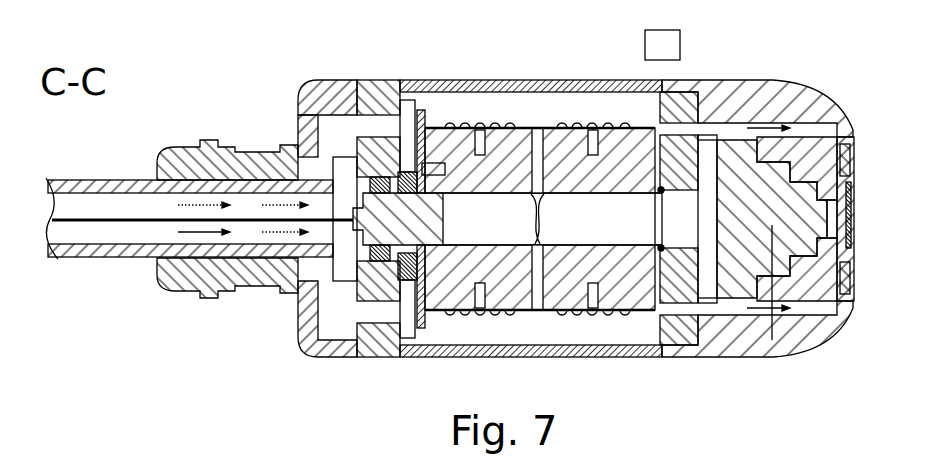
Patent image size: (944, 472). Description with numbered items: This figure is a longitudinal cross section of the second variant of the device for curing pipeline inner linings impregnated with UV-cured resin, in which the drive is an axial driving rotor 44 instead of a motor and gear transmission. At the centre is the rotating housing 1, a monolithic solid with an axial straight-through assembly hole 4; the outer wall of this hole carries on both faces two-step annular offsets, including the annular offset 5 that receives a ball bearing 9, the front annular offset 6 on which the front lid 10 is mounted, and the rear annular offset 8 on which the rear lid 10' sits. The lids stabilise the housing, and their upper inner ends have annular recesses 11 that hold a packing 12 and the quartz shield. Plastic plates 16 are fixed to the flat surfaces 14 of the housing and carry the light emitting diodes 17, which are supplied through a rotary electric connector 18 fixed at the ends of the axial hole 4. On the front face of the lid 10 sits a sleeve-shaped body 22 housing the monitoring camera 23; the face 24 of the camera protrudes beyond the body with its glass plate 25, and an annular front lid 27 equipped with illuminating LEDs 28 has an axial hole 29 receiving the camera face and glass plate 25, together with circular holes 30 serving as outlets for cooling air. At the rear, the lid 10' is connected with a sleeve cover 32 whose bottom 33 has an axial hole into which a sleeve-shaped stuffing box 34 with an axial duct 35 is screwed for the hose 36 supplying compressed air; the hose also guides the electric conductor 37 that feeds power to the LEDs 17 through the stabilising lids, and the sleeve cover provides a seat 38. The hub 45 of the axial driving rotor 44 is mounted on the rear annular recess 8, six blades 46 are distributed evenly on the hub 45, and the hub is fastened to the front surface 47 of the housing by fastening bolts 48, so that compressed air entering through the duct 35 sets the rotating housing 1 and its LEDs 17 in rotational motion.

The rotating housing 1 is at (533, 60).
The axial straight-through assembly hole 4 is at (567, 396).
The annular offset 5 is at (779, 60).
The front annular offset 6 is at (724, 60).
The rear annular offset 8 is at (522, 396).
The ball bearings 9 is at (301, 62).
The front lid 10 is at (690, 267).
The rear lid 10' is at (316, 140).
The annular recesses 11 is at (683, 30).
The packing 12 is at (683, 60).
The flat surfaces 14 is at (478, 396).
The plastic plates 16 is at (637, 60).
The light emitting diodes 17 is at (589, 60).
The rotary electric connector 18 is at (611, 396).
The sleeve-shaped body 22 is at (839, 60).
The monitoring camera 23 is at (769, 396).
The face of the camera 24 is at (900, 190).
The glass plate 25 is at (899, 262).
The annular front lid 27 is at (886, 73).
The LEDs 28 is at (893, 108).
The axial hole 29 is at (900, 218).
The circular holes 30 is at (886, 45).
The sleeve cover 32 is at (257, 60).
The bottom 33 is at (257, 108).
The sleeve-shaped stuffing box 34 is at (180, 328).
The axial hole 35 is at (128, 133).
The hose 36 is at (90, 297).
The electric conductor 37 is at (132, 297).
The seat 38 is at (229, 328).
The axial driving rotor 44 is at (361, 410).
The hub 45 is at (271, 378).
The blades 46 is at (455, 60).
The front surface 47 is at (511, 26).
The fastening bolts 48 is at (507, 60).